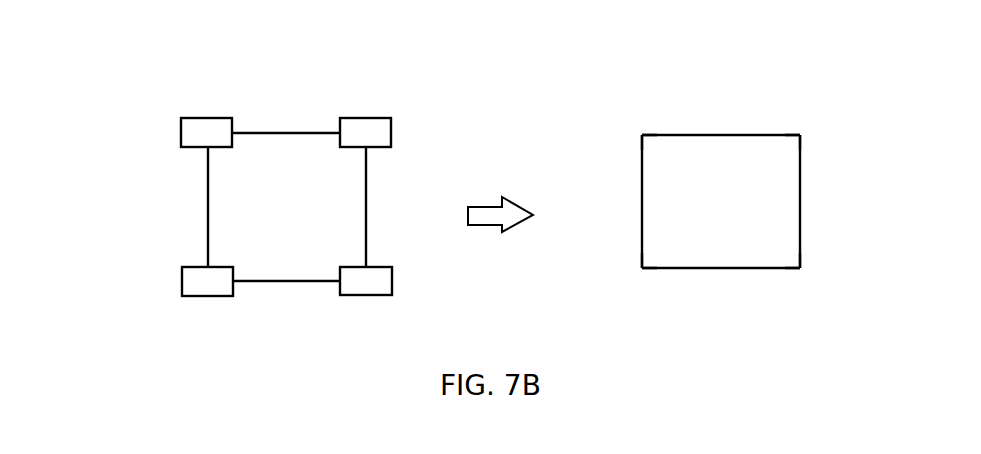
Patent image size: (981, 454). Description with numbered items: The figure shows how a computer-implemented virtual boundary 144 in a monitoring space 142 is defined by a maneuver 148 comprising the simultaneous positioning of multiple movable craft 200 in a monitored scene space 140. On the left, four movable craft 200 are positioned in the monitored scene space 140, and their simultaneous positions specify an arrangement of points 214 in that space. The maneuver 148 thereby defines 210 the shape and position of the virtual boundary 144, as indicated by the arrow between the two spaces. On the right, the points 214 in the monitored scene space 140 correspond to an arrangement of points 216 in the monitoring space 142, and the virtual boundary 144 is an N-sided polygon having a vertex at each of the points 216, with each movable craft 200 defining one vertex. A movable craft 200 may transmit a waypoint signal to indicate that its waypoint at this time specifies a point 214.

The monitored scene space 140 is at (352, 88).
The maneuver 148 is at (190, 204).
The movable craft 200 is at (208, 117).
The point 214 is at (218, 133).
The definition 210 is at (485, 202).
The monitoring space 142 is at (769, 88).
The computer-implemented virtual boundary 144 is at (800, 202).
The corresponding point 216 is at (642, 135).